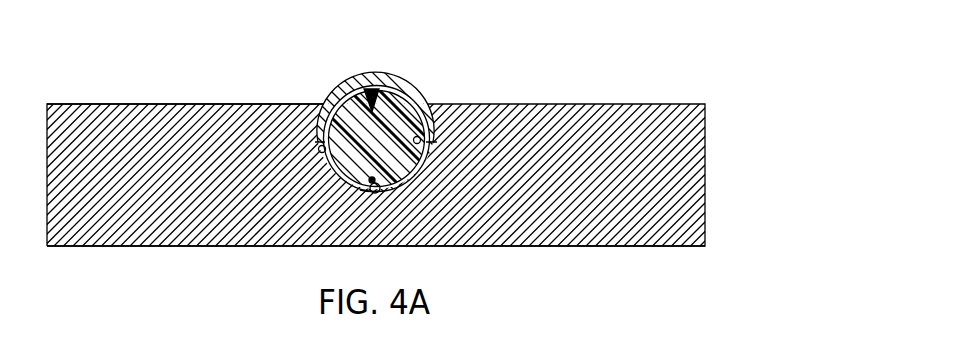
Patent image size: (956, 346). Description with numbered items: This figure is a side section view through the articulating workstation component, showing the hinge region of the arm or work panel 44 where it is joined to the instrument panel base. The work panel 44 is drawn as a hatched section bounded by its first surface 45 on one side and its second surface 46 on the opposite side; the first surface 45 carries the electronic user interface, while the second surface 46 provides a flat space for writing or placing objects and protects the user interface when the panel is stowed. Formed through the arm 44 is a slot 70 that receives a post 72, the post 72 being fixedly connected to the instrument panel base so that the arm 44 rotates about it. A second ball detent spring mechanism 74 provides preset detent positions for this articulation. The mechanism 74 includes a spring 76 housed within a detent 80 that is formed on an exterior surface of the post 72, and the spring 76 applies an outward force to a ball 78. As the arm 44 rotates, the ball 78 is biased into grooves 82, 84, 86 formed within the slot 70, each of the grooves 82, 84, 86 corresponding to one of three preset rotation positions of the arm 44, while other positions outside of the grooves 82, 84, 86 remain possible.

The work panel 44 is at (587, 122).
The first surface 45 is at (118, 246).
The second surface 46 is at (173, 104).
The slot 70 is at (382, 88).
The post 72 is at (346, 101).
The second ball detent spring mechanism 74 is at (367, 90).
The spring 76 is at (378, 178).
The ball 78 is at (381, 192).
The detent 80 is at (375, 181).
The groove 82 is at (322, 153).
The groove 84 is at (365, 196).
The groove 86 is at (418, 137).